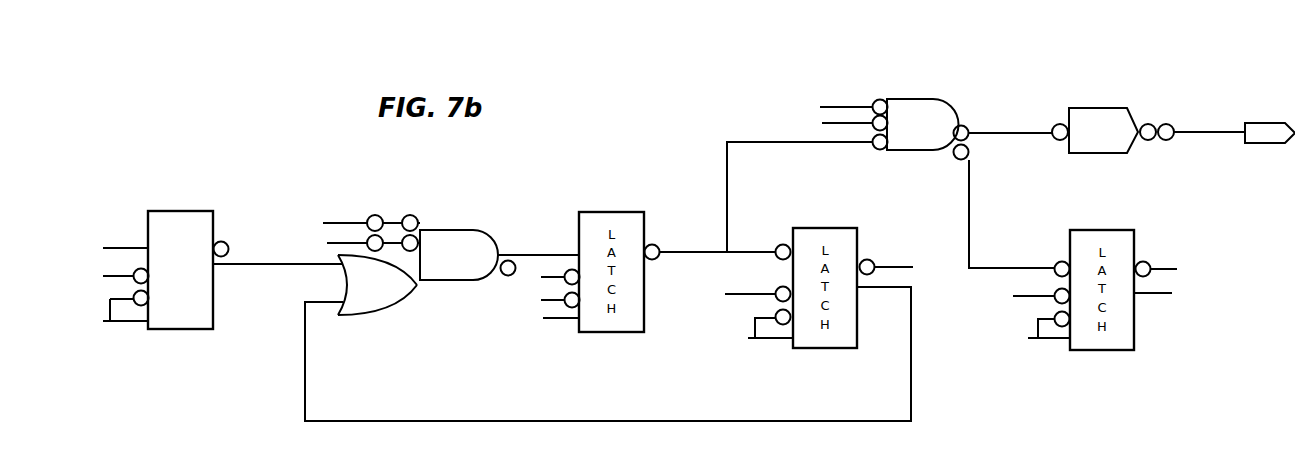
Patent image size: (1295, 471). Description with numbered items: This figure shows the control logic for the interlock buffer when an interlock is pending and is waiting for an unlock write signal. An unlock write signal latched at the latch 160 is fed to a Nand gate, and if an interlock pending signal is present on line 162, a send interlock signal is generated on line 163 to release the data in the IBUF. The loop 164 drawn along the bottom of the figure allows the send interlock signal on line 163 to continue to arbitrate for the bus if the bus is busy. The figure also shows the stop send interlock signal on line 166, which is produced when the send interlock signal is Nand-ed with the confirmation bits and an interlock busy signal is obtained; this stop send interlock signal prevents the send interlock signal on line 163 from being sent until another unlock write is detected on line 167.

The latch 160 is at (185, 214).
The line 162 is at (327, 243).
The line 163 is at (755, 140).
The loop 164 is at (912, 383).
The line 166 is at (348, 222).
The line 167 is at (127, 248).